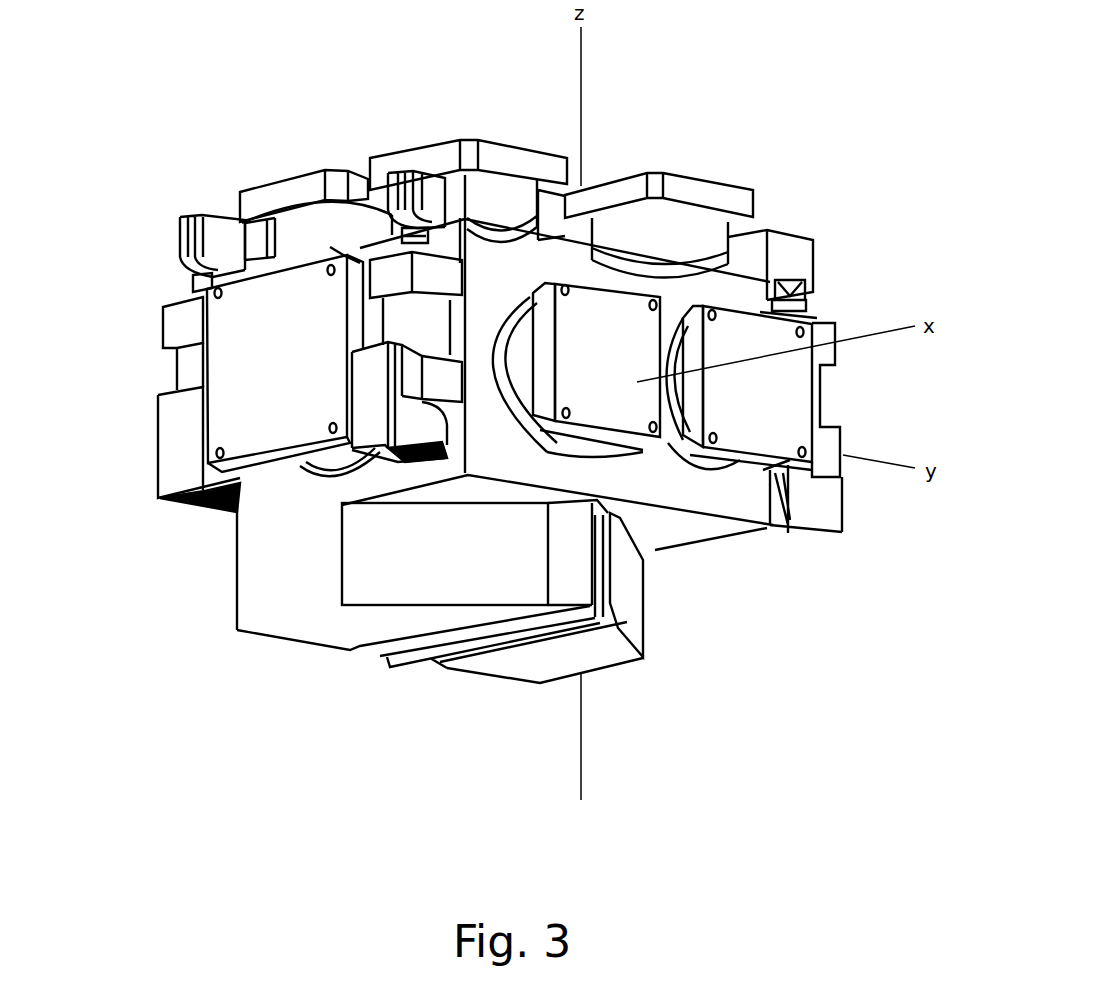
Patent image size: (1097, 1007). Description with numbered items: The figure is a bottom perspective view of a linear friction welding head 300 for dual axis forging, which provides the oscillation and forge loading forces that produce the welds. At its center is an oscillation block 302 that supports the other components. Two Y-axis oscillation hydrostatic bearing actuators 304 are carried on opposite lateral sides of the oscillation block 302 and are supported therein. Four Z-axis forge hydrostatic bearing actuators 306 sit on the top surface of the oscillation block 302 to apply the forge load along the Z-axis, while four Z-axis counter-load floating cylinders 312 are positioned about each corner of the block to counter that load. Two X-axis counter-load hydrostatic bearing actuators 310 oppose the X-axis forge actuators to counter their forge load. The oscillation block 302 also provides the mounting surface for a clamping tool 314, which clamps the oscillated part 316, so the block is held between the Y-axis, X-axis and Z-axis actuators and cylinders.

The linear friction welding head 300 is at (844, 135).
The oscillation block 302 is at (267, 582).
The Y-axis oscillation hydrostatic bearing actuator 304 is at (237, 388).
The Z-axis forge hydrostatic bearing actuator 306 is at (300, 192).
The X-axis counter-load hydrostatic bearing actuator 310 is at (637, 322).
The Z-axis counter-load floating cylinder 312 is at (190, 378).
The clamping tool 314 is at (615, 580).
The oscillated part 316 is at (618, 630).